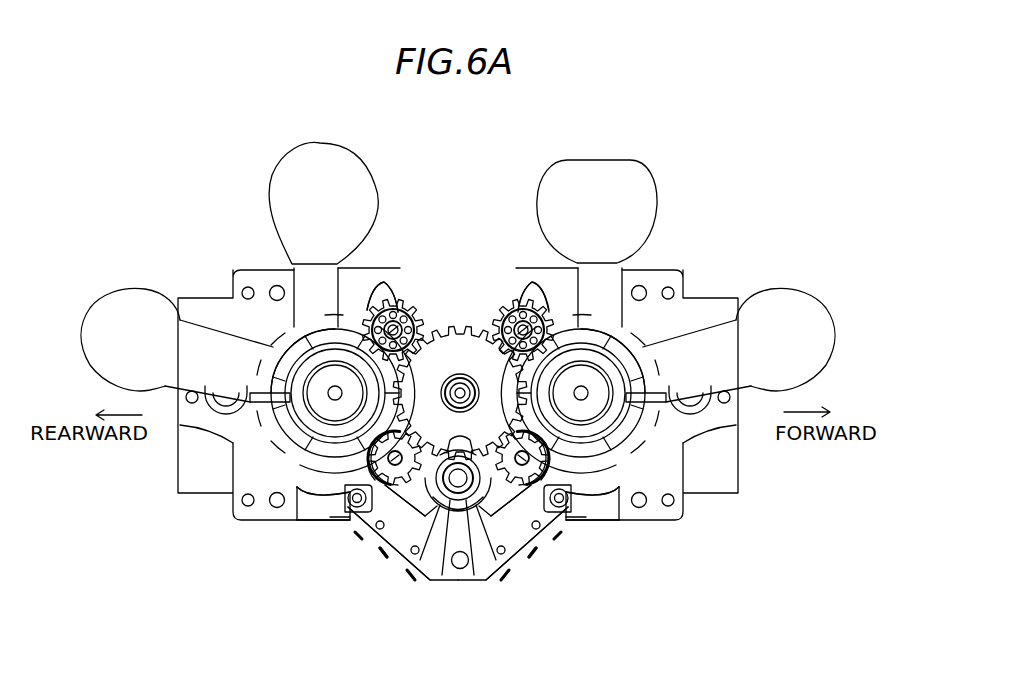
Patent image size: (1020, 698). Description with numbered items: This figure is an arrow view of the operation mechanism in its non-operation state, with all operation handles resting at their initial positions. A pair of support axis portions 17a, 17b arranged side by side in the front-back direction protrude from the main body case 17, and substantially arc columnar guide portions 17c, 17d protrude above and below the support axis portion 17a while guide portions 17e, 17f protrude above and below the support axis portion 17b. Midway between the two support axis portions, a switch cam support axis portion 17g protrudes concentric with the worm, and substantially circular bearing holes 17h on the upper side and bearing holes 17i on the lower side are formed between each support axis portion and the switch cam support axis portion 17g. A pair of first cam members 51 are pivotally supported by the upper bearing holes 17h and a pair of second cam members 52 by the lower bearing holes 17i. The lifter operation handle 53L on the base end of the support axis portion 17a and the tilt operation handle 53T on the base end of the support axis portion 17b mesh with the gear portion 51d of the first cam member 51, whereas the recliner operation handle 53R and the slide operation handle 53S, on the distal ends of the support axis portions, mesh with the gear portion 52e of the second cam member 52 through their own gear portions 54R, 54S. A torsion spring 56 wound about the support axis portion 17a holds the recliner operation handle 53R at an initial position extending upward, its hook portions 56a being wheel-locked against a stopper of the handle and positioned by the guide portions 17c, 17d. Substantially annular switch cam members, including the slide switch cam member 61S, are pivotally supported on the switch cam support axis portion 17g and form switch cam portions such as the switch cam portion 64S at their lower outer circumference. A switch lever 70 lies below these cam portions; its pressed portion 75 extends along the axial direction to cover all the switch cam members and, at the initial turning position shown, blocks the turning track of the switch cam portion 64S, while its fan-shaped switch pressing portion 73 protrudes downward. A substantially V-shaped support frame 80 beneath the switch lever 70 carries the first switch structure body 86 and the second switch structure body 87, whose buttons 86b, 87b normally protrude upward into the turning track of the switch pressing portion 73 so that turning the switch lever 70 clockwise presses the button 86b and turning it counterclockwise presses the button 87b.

The main body case 17 is at (234, 269).
The support axis portion 17a is at (325, 348).
The support axis portion 17b is at (588, 348).
The guide portion 17c is at (326, 296).
The guide portion 17d is at (303, 520).
The guide portion 17e is at (570, 280).
The guide portion 17f is at (595, 500).
The switch cam support axis portion 17g is at (456, 386).
The bearing hole 17h is at (385, 283).
The bearing hole 17i is at (383, 553).
The first cam member 51 is at (490, 311).
The gear portion 51d is at (338, 365).
The second cam member 52 is at (458, 486).
The gear portion 52e is at (343, 483).
The lifter operation handle 53L is at (118, 291).
The recliner operation handle 53R is at (345, 157).
The slide operation handle 53S is at (632, 168).
The tilt operation handle 53T is at (782, 291).
The gear portion 54R is at (402, 305).
The gear portion 54S is at (515, 303).
The torsion spring 56 is at (262, 367).
The hook portion 56a is at (228, 432).
The slide switch cam member 61S is at (397, 560).
The switch cam portion 64S is at (500, 560).
The switch lever 70 is at (455, 505).
The switch pressing portion 73 is at (462, 570).
The pressed portion 75 is at (474, 393).
The support frame 80 is at (530, 555).
The first switch structure body 86 is at (395, 540).
The button 86b is at (418, 560).
The second switch structure body 87 is at (512, 555).
The button 87b is at (488, 558).